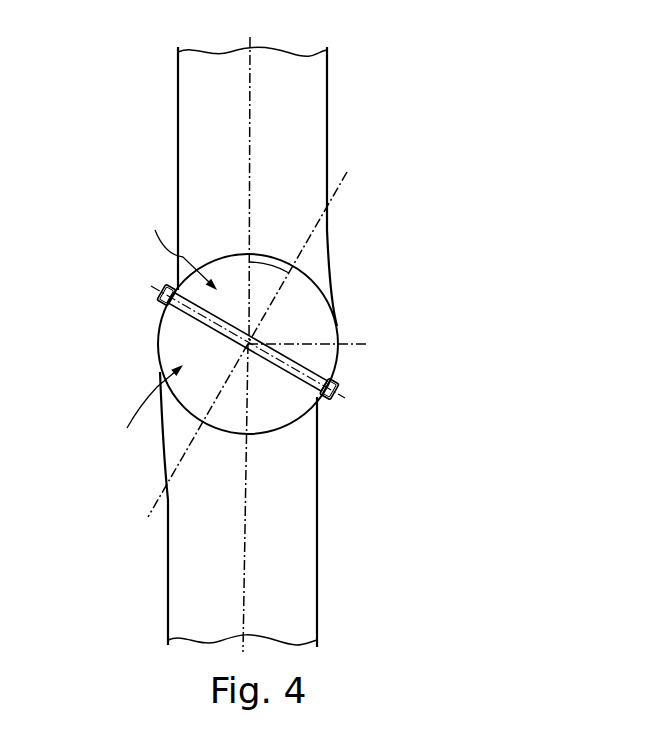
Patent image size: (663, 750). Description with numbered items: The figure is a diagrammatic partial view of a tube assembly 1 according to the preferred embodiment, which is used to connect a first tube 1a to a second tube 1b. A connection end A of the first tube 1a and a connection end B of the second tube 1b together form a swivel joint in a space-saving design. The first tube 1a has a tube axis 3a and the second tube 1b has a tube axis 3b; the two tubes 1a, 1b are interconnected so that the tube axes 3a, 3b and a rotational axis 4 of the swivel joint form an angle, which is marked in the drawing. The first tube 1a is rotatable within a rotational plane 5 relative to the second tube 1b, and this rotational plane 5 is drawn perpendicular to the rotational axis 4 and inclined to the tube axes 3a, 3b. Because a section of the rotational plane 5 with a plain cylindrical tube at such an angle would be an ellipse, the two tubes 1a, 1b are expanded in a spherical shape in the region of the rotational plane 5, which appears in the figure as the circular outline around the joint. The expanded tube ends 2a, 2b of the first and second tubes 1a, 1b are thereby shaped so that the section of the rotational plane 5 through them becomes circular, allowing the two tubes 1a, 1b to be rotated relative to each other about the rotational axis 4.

The tube assembly 1 is at (257, 324).
The first tube 1a is at (327, 95).
The second tube 1b is at (317, 568).
The expanded tube end of the first tube 2a is at (337, 367).
The expanded tube end of the second tube 2b is at (158, 332).
The tube axis of the first tube 3a is at (250, 158).
The tube axis of the second tube 3b is at (243, 567).
The rotational axis 4 is at (345, 182).
The rotational plane 5 is at (342, 400).
The connection end of the first tube A is at (177, 249).
The connection end of the second tube B is at (145, 404).